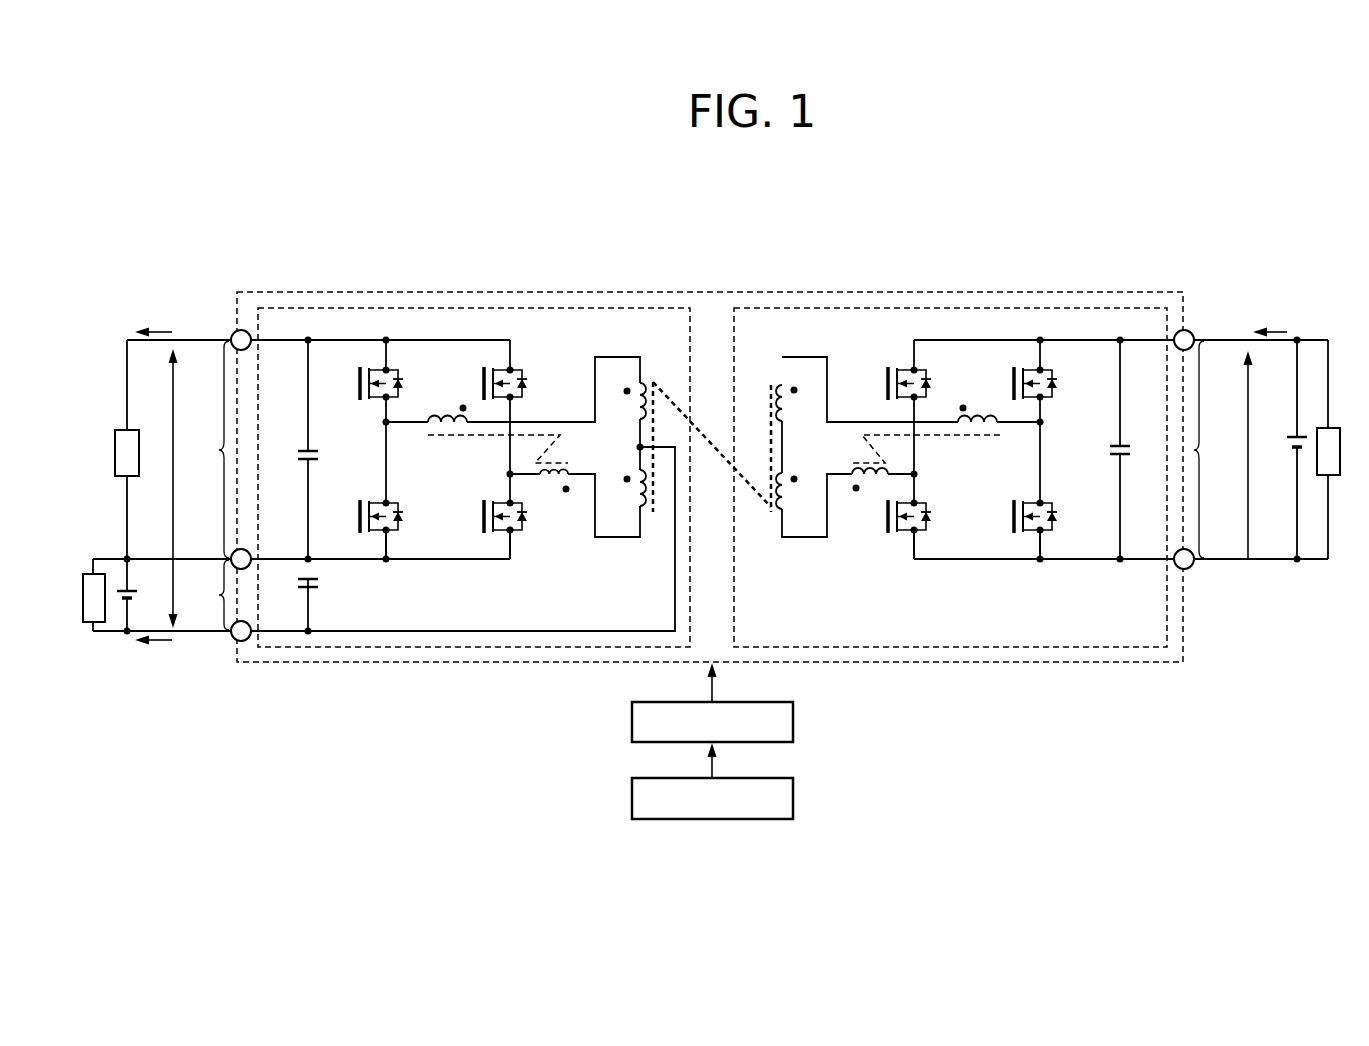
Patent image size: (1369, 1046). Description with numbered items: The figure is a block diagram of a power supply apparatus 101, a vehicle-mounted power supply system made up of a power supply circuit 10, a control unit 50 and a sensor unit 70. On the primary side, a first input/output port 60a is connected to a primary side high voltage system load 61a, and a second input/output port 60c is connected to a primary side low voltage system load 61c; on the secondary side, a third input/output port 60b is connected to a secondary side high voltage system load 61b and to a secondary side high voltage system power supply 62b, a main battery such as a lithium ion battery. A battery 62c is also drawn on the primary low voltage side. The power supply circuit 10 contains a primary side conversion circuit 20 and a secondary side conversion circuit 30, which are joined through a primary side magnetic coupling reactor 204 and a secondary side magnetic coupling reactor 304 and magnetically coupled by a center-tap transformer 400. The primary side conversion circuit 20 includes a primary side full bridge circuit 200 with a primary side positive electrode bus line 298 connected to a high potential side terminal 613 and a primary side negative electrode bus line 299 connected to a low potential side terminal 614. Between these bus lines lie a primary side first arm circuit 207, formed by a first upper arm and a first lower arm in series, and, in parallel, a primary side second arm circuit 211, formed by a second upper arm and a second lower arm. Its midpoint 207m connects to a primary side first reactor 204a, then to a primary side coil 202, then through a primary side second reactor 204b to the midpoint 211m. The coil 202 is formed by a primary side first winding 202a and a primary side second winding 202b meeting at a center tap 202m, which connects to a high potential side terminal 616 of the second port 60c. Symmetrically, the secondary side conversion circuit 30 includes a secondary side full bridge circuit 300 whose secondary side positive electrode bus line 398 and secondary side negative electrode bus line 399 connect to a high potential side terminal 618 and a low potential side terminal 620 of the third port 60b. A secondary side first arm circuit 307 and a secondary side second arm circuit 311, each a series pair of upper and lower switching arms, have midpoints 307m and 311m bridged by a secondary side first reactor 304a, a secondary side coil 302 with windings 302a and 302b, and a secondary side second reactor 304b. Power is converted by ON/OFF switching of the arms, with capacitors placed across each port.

The power supply apparatus 101 is at (220, 246).
The power supply circuit 10 is at (1068, 292).
The primary side conversion circuit 20 is at (463, 300).
The secondary side conversion circuit 30 is at (965, 300).
The primary side full bridge circuit 200 is at (548, 308).
The secondary side full bridge circuit 300 is at (865, 308).
The primary side coil 202 is at (611, 415).
The primary side first winding 202a is at (626, 390).
The primary side second winding 202b is at (639, 522).
The center tap 202m is at (640, 447).
The primary side magnetic coupling reactor 204 is at (513, 445).
The primary side first reactor 204a is at (460, 406).
The primary side second reactor 204b is at (565, 491).
The primary side first arm circuit 207 is at (381, 536).
The midpoint of the primary side first arm circuit 207m is at (386, 422).
The primary side second arm circuit 211 is at (500, 536).
The midpoint of the primary side second arm circuit 211m is at (510, 474).
The primary side positive electrode bus line 298 is at (337, 340).
The primary side negative electrode bus line 299 is at (332, 559).
The secondary side coil 302 is at (804, 416).
The secondary side first winding 302a is at (795, 388).
The secondary side second winding 302b is at (785, 510).
The secondary side magnetic coupling reactor 304 is at (911, 459).
The secondary side first reactor 304a is at (963, 406).
The secondary side second reactor 304b is at (856, 492).
The secondary side first arm circuit 307 is at (1013, 536).
The midpoint of the secondary side first arm circuit 307m is at (1040, 422).
The secondary side second arm circuit 311 is at (894, 536).
The midpoint of the secondary side second arm circuit 311m is at (914, 474).
The secondary side positive electrode bus line 398 is at (1058, 340).
The secondary side negative electrode bus line 399 is at (1087, 559).
The transformer 400 is at (712, 426).
The control unit 50 is at (793, 723).
The sensor unit 70 is at (793, 798).
The high potential side terminal 613 is at (233, 333).
The low potential side terminal 614 is at (250, 552).
The high potential side terminal 616 is at (237, 641).
The high potential side terminal 618 is at (1191, 332).
The low potential side terminal 620 is at (1177, 553).
The first input/output port 60a is at (199, 483).
The third input/output port 60b is at (1223, 450).
The second input/output port 60c is at (199, 595).
The primary side high voltage system load 61a is at (116, 430).
The secondary side high voltage system load 61b is at (1332, 428).
The primary side low voltage system load 61c is at (91, 622).
The secondary side high voltage system power supply 62b is at (1297, 450).
The third battery 62c is at (122, 589).